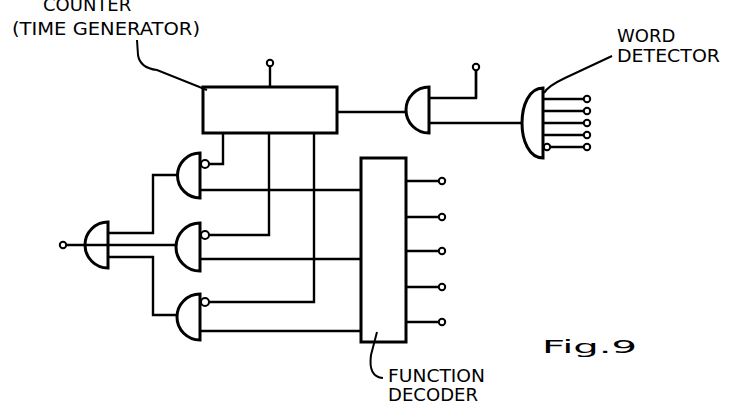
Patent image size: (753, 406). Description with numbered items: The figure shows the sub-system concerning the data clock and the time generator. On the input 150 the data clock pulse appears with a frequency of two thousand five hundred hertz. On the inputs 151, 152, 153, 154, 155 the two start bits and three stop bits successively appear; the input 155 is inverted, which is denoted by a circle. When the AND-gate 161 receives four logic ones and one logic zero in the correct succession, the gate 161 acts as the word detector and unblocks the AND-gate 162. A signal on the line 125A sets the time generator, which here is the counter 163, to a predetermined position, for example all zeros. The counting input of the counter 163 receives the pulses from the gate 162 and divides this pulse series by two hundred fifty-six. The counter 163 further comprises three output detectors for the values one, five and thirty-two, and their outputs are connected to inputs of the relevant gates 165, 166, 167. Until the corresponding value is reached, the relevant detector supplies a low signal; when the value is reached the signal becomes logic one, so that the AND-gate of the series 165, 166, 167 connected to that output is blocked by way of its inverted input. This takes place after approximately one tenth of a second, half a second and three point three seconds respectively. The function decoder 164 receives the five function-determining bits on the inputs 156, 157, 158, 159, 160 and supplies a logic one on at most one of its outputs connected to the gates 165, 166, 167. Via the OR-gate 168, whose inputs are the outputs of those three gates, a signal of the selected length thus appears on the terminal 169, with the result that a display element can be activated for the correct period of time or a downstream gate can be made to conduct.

The counter 163 is at (223, 84).
The line 125A is at (273, 78).
The AND-gate 162 is at (422, 85).
The input 150 is at (480, 80).
The AND-gate 161 is at (538, 86).
The input 151 is at (598, 93).
The input 152 is at (590, 110).
The input 153 is at (590, 122).
The input 154 is at (590, 134).
The inverted input 155 is at (590, 148).
The function decoder 164 is at (358, 254).
The input 156 is at (448, 181).
The input 157 is at (448, 217).
The input 158 is at (448, 251).
The input 159 is at (448, 287).
The input 160 is at (448, 322).
The AND-gate 165 is at (203, 180).
The AND-gate 166 is at (201, 252).
The AND-gate 167 is at (201, 320).
The OR-gate 168 is at (98, 268).
The terminal 169 is at (63, 240).